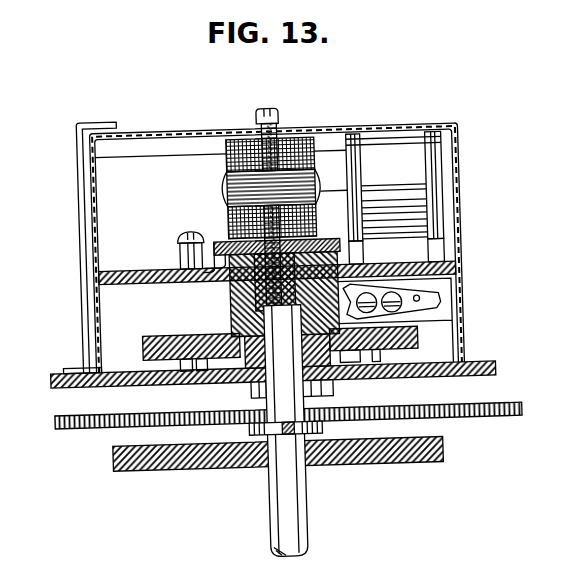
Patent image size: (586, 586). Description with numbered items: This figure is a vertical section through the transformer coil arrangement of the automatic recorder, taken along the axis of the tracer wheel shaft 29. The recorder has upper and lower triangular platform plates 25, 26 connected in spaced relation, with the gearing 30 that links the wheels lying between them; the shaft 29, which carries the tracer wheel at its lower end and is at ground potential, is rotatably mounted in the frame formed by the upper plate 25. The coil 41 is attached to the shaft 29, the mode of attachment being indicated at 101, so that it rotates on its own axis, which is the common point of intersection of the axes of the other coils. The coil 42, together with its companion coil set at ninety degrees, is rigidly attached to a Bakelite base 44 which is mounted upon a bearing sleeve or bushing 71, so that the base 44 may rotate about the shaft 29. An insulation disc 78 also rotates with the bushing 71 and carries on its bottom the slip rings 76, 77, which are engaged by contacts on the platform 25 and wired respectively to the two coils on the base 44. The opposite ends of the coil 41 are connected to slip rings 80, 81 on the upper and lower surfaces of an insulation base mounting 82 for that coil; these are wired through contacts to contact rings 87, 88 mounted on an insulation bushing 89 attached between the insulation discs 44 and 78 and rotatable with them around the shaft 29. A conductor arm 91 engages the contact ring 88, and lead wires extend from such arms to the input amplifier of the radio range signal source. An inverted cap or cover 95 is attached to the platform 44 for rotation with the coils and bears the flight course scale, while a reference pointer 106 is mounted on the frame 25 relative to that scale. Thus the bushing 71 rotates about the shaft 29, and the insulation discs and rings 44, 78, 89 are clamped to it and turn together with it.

The upper triangular platform plate 25 is at (497, 374).
The lower triangular platform plate 26 is at (400, 467).
The rotatable shaft 29 is at (303, 521).
The gearing 30 is at (475, 415).
The coil 41 is at (305, 136).
The coil 42 is at (420, 181).
The rotatable base 44 is at (425, 279).
The bearing sleeve or bushing 71 is at (328, 397).
The slip ring 76 is at (182, 368).
The slip ring 77 is at (210, 370).
The insulation disc 78 is at (405, 353).
The slip ring 80 is at (222, 242).
The slip ring 81 is at (184, 262).
The insulation base mounting 82 is at (343, 241).
The contact ring 87 is at (230, 288).
The contact ring 88 is at (230, 323).
The insulation bushing 89 is at (232, 300).
The conductor arm 91 is at (420, 307).
The inverted cap or cover 95 is at (466, 196).
The mode of attachment 101 is at (232, 160).
The reference pointer 106 is at (84, 305).